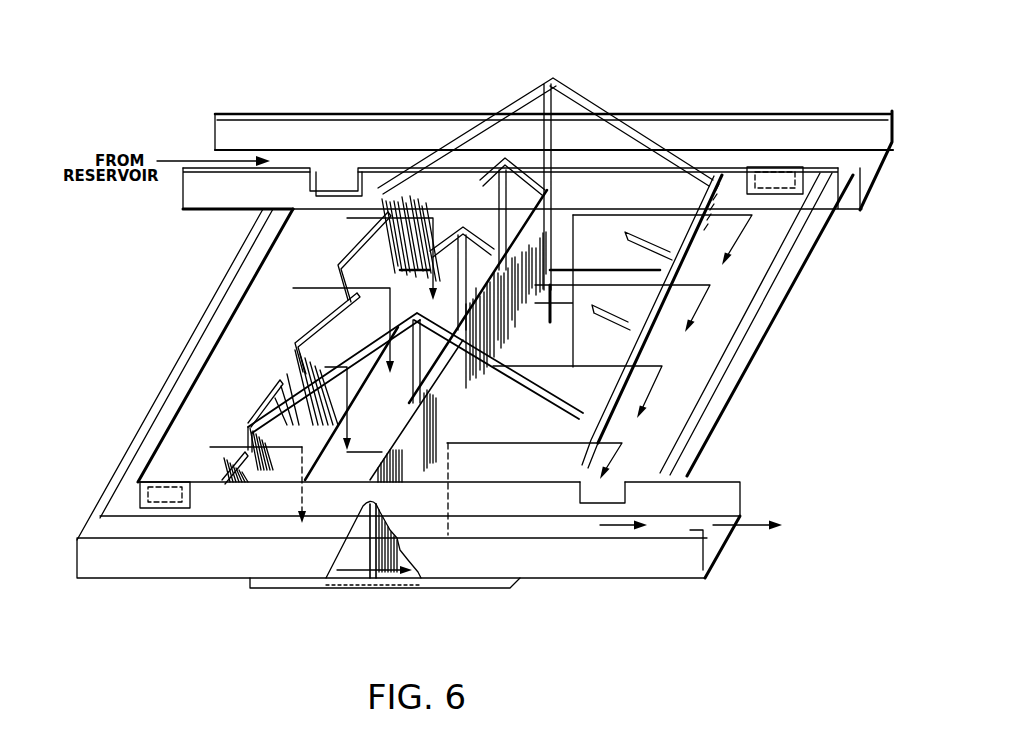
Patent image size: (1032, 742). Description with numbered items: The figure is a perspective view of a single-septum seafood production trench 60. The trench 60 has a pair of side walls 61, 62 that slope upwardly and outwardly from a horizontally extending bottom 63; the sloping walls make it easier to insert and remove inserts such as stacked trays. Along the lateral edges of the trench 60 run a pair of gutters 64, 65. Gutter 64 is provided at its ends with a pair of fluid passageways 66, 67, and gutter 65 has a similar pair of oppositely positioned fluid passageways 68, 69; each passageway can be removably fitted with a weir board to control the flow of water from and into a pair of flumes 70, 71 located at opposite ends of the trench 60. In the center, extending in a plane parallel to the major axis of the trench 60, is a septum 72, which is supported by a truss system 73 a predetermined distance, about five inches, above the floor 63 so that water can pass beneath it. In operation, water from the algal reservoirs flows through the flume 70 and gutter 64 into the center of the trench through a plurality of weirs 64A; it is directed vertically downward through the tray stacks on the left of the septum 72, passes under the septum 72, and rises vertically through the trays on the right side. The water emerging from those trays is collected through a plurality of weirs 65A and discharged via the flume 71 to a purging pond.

The single-septum seafood production trench 60 is at (150, 592).
The side wall 61 is at (384, 417).
The side wall 62 is at (633, 337).
The bottom 63 is at (395, 580).
The gutter 64 is at (230, 338).
The weirs 64A is at (366, 218).
The gutter 65 is at (752, 300).
The weirs 65A is at (706, 240).
The fluid passageway 66 is at (308, 236).
The fluid passageway 67 is at (152, 492).
The fluid passageway 68 is at (774, 180).
The fluid passageway 69 is at (613, 484).
The flume 70 is at (283, 161).
The flume 71 is at (212, 523).
The septum 72 is at (535, 223).
The truss system 73 is at (513, 104).